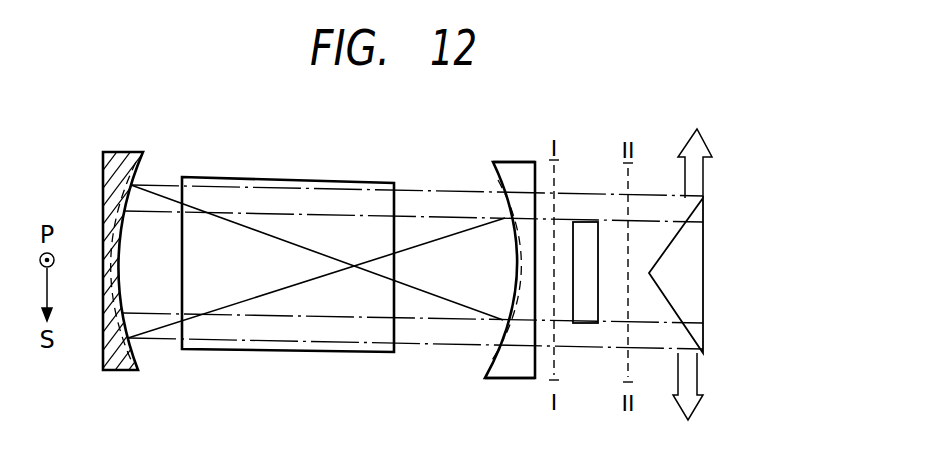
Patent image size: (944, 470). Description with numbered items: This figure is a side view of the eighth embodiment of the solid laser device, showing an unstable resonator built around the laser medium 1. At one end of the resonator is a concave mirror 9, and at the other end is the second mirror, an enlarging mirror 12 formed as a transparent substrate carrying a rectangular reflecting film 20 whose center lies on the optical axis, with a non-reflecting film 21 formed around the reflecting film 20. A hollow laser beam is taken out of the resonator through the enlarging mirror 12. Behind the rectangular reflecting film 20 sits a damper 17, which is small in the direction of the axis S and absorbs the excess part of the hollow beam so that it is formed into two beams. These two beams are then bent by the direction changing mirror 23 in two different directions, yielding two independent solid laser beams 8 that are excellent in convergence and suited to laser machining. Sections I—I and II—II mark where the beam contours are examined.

The laser medium 1 is at (350, 180).
The laser beams 8 is at (699, 140).
The concave mirror 9 is at (107, 372).
The enlarging mirror 12 is at (503, 381).
The damper 17 is at (590, 324).
The rectangular reflecting film 20 is at (517, 256).
The non-reflecting film 21 is at (510, 161).
The direction changing mirror 23 is at (705, 280).